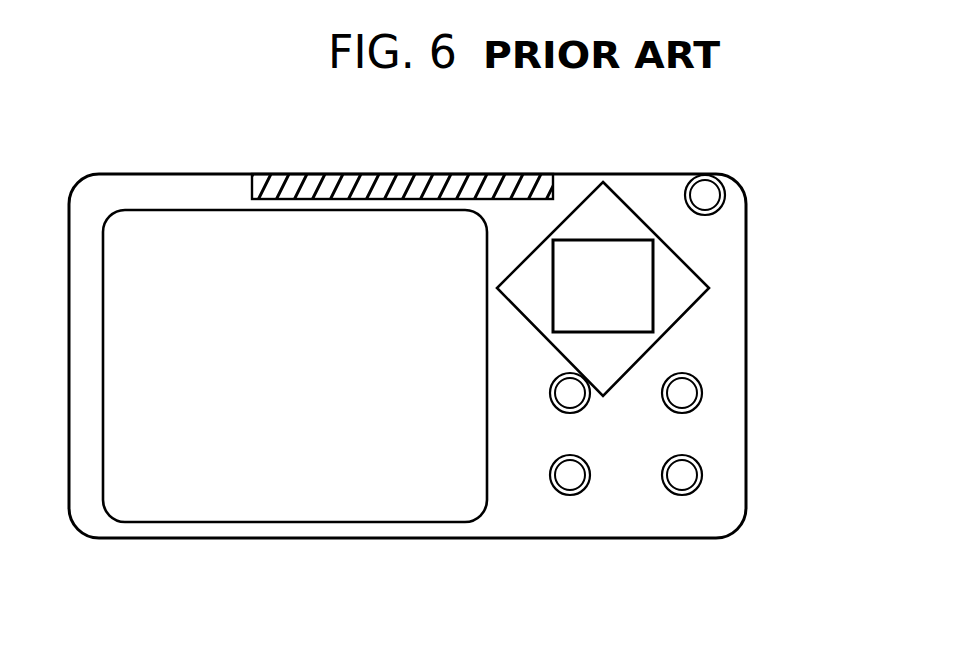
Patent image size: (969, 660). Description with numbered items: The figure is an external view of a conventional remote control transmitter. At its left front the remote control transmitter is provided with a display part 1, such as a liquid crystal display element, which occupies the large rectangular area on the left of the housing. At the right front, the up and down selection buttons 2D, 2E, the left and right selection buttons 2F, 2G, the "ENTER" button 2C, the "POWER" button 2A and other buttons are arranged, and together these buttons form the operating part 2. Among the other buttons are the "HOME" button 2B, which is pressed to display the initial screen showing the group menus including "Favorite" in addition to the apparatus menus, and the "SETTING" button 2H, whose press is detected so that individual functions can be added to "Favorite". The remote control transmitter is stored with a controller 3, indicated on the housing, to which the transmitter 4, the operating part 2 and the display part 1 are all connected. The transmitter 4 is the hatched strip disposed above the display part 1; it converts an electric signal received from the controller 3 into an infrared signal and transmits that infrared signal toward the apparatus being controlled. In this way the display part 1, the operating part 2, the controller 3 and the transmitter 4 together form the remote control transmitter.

The display part 1 is at (260, 500).
The operating part 2 is at (691, 372).
The POWER button 2A is at (731, 491).
The HOME button 2B is at (590, 483).
The ENTER button 2C is at (647, 322).
The up selection button 2D is at (643, 227).
The down selection button 2E is at (640, 345).
The left selection button 2F is at (543, 325).
The right selection button 2G is at (677, 267).
The SETTING button 2H is at (723, 186).
The controller 3 is at (515, 518).
The transmitter 4 is at (407, 183).